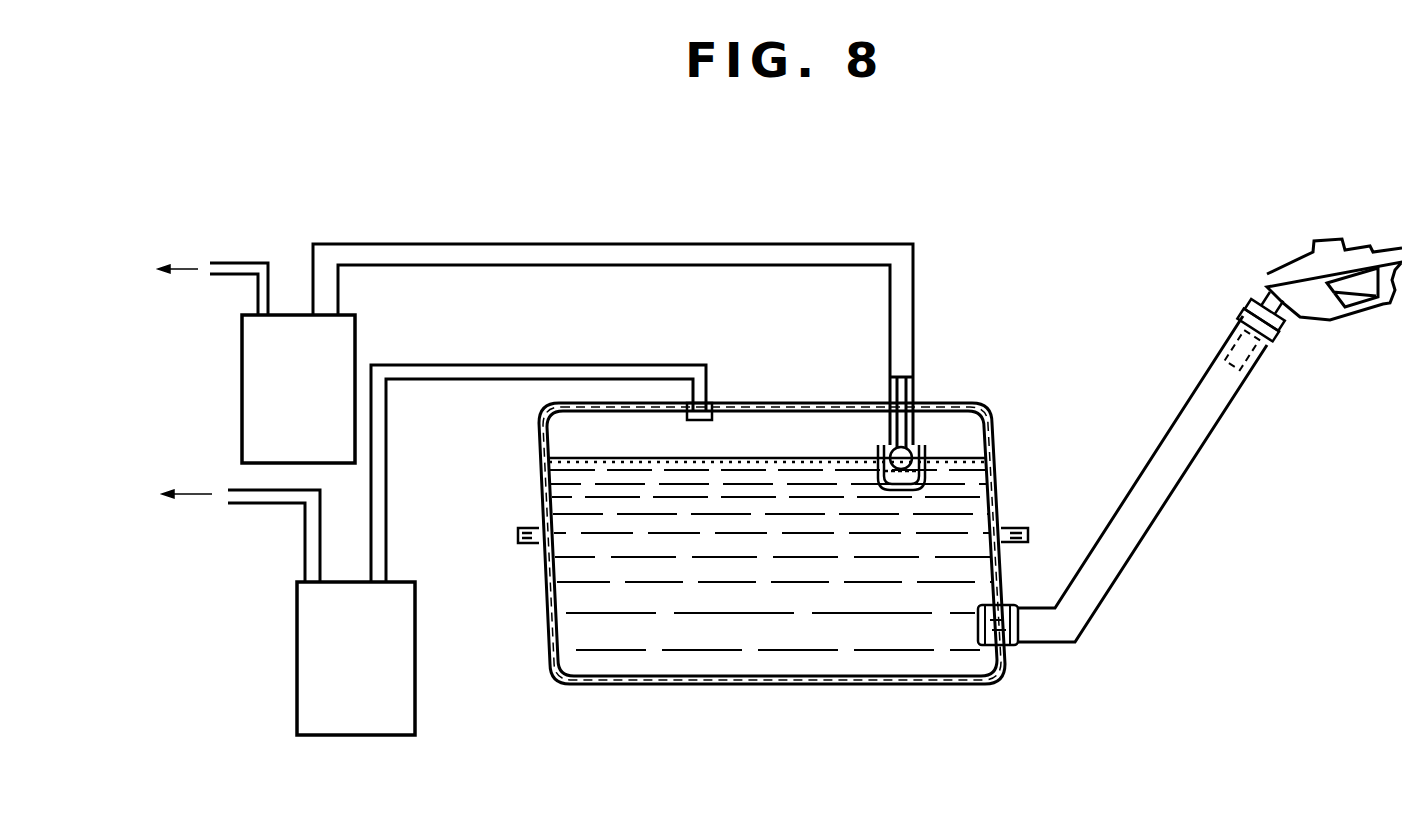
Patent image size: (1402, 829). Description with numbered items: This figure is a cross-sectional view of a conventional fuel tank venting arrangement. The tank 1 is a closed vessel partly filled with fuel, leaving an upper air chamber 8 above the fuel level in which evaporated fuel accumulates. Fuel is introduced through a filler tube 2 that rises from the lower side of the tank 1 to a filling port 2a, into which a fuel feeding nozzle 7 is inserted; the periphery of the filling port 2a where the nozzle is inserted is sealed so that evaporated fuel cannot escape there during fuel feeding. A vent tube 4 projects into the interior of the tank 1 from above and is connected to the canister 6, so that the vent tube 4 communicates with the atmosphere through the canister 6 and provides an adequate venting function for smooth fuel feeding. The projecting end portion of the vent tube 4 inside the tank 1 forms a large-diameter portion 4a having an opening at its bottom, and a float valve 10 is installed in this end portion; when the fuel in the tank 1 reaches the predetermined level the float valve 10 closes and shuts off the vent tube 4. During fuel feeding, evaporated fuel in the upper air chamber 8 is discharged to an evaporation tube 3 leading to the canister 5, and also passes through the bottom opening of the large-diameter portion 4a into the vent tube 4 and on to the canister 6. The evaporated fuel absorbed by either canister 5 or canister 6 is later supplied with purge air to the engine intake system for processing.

The tank 1 is at (936, 403).
The filler tube 2 is at (1183, 477).
The filling port 2a is at (1248, 312).
The evaporation tube 3 is at (470, 365).
The vent tube 4 is at (580, 243).
The large-diameter portion 4a is at (922, 452).
The canister 5 is at (297, 648).
The canister 6 is at (242, 395).
The fuel nozzle 7 is at (1318, 242).
The upper air chamber 8 is at (762, 445).
The float valve 10 is at (886, 452).